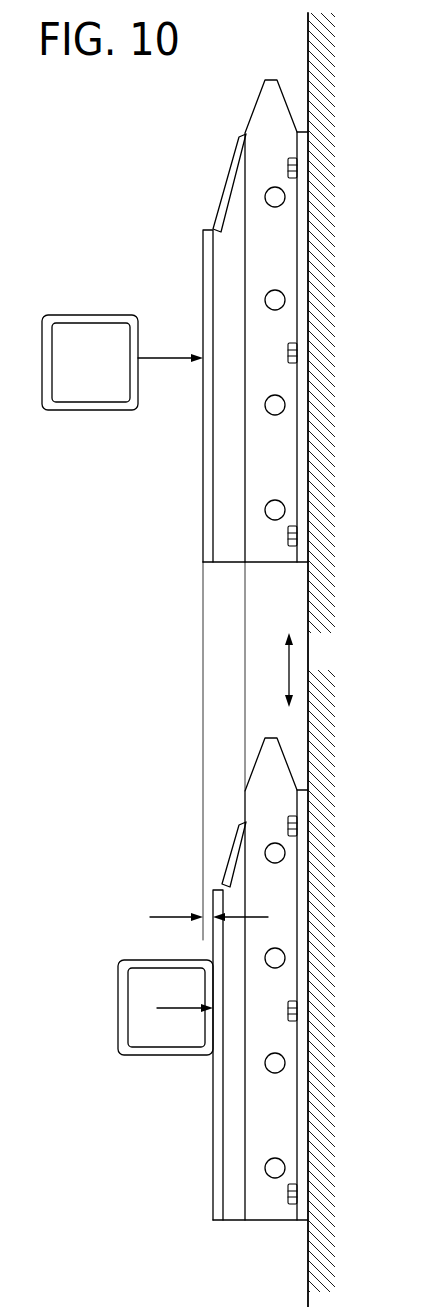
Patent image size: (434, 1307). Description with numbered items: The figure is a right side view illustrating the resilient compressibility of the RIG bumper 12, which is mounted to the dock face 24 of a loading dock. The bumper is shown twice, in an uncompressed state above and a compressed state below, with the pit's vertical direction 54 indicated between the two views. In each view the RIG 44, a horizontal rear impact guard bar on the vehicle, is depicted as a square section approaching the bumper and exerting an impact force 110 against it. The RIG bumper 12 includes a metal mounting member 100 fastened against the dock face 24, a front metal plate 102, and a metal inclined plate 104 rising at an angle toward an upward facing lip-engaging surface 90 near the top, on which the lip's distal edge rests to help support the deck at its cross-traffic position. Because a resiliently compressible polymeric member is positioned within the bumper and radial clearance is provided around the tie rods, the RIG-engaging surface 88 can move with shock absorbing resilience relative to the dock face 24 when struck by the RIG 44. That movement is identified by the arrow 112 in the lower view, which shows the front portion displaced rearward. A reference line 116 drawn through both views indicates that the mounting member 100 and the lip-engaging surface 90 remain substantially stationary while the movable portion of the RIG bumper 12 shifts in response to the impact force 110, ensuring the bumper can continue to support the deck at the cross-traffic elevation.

The RIG bumper 12 is at (97, 208).
The dock face 24 is at (308, 41).
The RIG 44 is at (80, 315).
The vertical direction 54 is at (289, 665).
The RIG-engaging surface 88 is at (203, 485).
The lip-engaging surface 90 is at (294, 118).
The metal mounting member 100 is at (245, 446).
The front metal plate 102 is at (203, 525).
The metal inclined plate 104 is at (226, 193).
The impact force 110 is at (171, 1009).
The arrow 112 is at (168, 914).
The reference line 116 is at (245, 682).